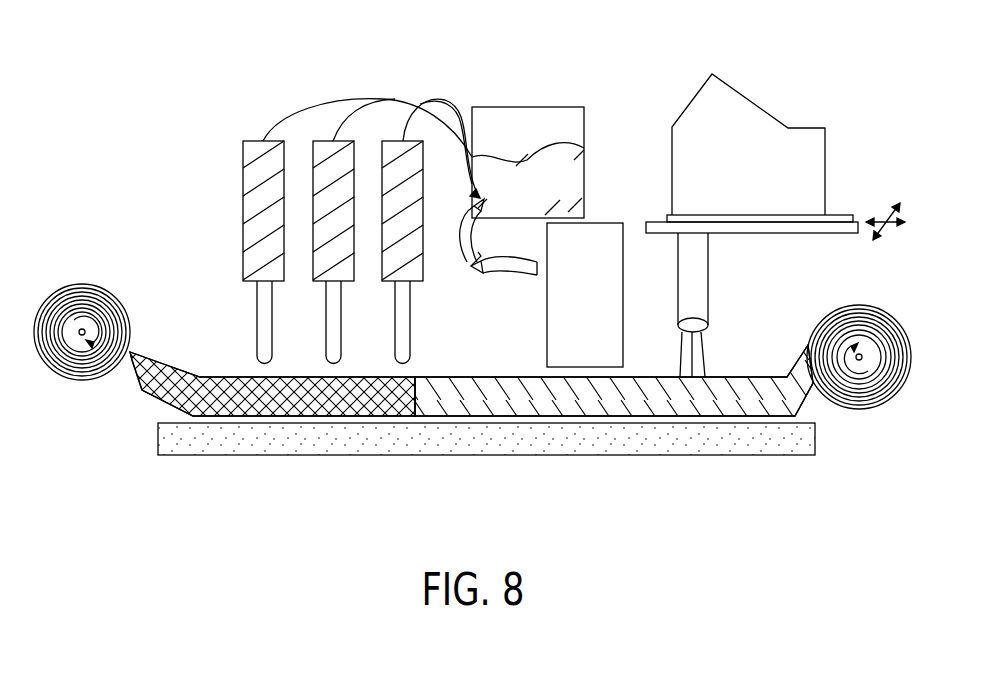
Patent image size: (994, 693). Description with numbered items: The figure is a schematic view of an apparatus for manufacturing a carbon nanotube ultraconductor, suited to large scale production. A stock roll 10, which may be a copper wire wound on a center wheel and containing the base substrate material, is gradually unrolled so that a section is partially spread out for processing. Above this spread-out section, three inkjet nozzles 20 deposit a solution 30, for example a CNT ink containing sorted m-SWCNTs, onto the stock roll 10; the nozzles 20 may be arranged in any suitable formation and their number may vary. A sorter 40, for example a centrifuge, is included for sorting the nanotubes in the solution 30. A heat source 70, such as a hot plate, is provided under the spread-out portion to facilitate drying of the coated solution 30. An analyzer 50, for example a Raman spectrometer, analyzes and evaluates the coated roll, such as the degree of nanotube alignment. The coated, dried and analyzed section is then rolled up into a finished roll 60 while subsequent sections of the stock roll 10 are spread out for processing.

The stock roll 10 is at (107, 289).
The inkjet nozzles 20 is at (250, 140).
The solution 30 is at (522, 107).
The sorter 40 is at (547, 302).
The analyzer 50 is at (729, 186).
The finished roll 60 is at (898, 320).
The heat source 70 is at (447, 455).